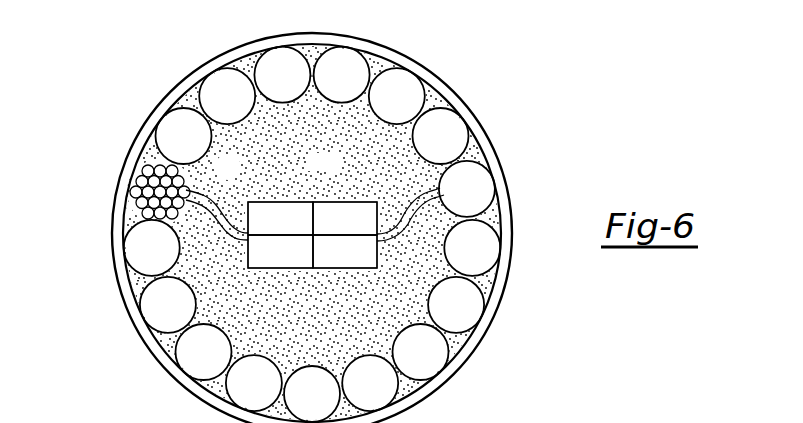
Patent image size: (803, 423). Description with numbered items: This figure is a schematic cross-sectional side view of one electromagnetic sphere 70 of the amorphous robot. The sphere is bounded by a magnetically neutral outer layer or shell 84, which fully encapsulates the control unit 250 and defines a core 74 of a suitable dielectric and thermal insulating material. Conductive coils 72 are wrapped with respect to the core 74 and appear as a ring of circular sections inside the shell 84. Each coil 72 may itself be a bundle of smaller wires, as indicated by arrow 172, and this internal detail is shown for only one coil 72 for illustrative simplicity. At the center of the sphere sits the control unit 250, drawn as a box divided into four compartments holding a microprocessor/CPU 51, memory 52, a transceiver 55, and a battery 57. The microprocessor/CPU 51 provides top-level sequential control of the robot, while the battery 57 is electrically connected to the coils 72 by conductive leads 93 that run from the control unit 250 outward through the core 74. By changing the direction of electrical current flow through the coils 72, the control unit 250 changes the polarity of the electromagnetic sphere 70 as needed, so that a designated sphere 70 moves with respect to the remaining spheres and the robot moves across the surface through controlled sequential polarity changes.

The electromagnetic sphere 70 is at (455, 60).
The outer layer or shell 84 is at (462, 110).
The core 74 is at (410, 177).
The conductive coils 72 is at (304, 407).
The bundles of smaller wires 172 is at (118, 163).
The conductive leads 93 is at (222, 211).
The control unit 250 is at (326, 201).
The microprocessor/CPU 51 is at (272, 229).
The memory 52 is at (337, 229).
The transceiver 55 is at (272, 262).
The battery 57 is at (337, 262).